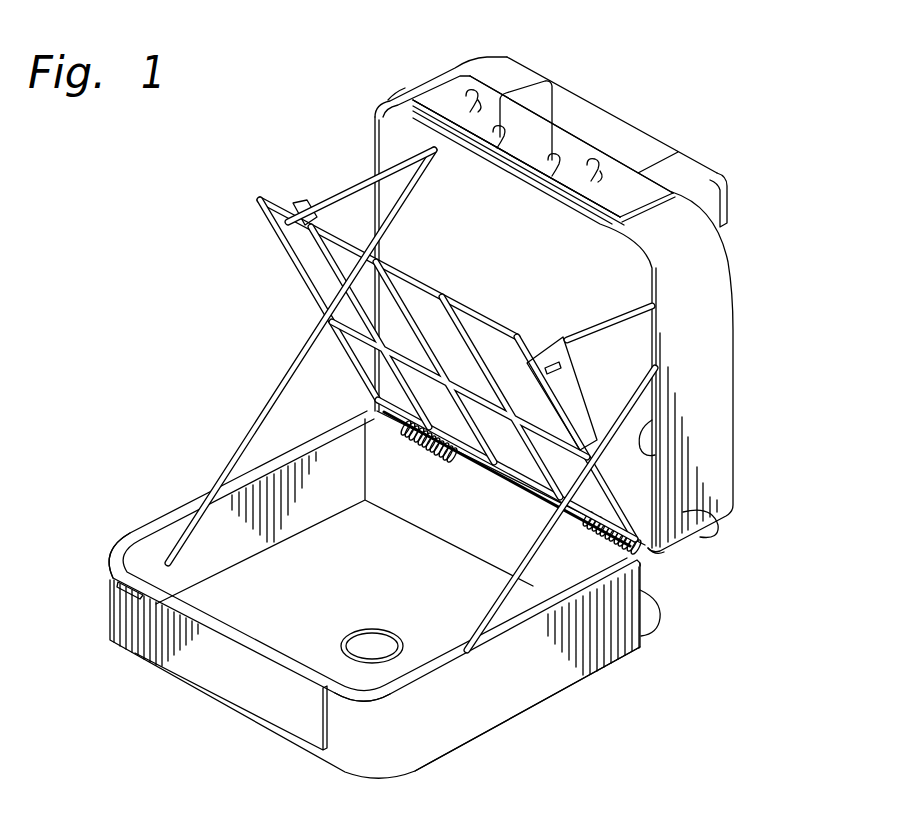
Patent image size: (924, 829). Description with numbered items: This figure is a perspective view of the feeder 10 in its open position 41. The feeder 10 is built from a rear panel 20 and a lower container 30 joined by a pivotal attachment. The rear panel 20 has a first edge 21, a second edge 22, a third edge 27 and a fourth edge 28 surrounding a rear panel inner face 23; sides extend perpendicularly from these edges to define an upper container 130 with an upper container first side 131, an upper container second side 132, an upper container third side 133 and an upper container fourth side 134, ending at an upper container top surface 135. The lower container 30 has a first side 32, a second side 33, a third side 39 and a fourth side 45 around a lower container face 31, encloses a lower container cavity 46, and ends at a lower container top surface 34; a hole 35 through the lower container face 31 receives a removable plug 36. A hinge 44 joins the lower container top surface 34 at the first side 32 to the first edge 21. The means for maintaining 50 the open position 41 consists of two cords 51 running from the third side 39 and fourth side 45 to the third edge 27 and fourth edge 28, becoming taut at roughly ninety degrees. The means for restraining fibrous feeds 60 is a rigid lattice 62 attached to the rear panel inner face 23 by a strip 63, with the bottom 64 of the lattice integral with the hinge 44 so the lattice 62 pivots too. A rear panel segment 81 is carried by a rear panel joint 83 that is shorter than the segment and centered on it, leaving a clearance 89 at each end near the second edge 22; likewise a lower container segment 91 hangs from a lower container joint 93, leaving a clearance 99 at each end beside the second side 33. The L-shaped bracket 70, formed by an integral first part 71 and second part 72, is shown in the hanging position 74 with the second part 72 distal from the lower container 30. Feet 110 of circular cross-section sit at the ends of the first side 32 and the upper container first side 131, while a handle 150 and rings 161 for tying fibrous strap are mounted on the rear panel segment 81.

The feeder 10 is at (108, 228).
The rear panel 20 is at (726, 249).
The first edge 21 is at (492, 466).
The second edge 22 is at (502, 170).
The rear panel inner face 23 is at (528, 277).
The third edge 27 is at (724, 318).
The fourth edge 28 is at (368, 150).
The lower container 30 is at (680, 752).
The lower container face 31 is at (385, 545).
The first side 32 is at (372, 478).
The second side 33 is at (357, 766).
The lower container top surface 34 is at (108, 558).
The hole 35 is at (378, 629).
The plug 36 is at (358, 640).
The third side 39 is at (547, 688).
The open position 41 is at (130, 413).
The hinge 44 is at (426, 446).
The fourth side 45 is at (145, 537).
The lower container cavity 46 is at (378, 692).
The means for maintaining 50 is at (188, 372).
The cord 51 is at (243, 440).
The means for restraining fibrous feeds 60 is at (256, 174).
The lattice 62 is at (272, 214).
The strip 63 is at (360, 182).
The bottom of lattice 64 is at (506, 473).
The L-shaped bracket 70 is at (523, 62).
The first part 71 is at (497, 57).
The second part 72 is at (728, 193).
The hanging position 74 is at (744, 70).
The rear panel segment 81 is at (608, 146).
The rear panel joint 83 is at (544, 165).
The clearance 89 is at (385, 118).
The lower container segment 91 is at (140, 646).
The lower container joint 93 is at (200, 619).
The clearance 99 is at (110, 586).
The foot 110 is at (652, 621).
The upper container 130 is at (802, 368).
The upper container first side 131 is at (668, 546).
The upper container second side 132 is at (433, 80).
The upper container third side 133 is at (743, 372).
The upper container fourth side 134 is at (373, 229).
The upper container top surface 135 is at (697, 453).
The handle 150 is at (530, 107).
The ring 161 is at (478, 95).